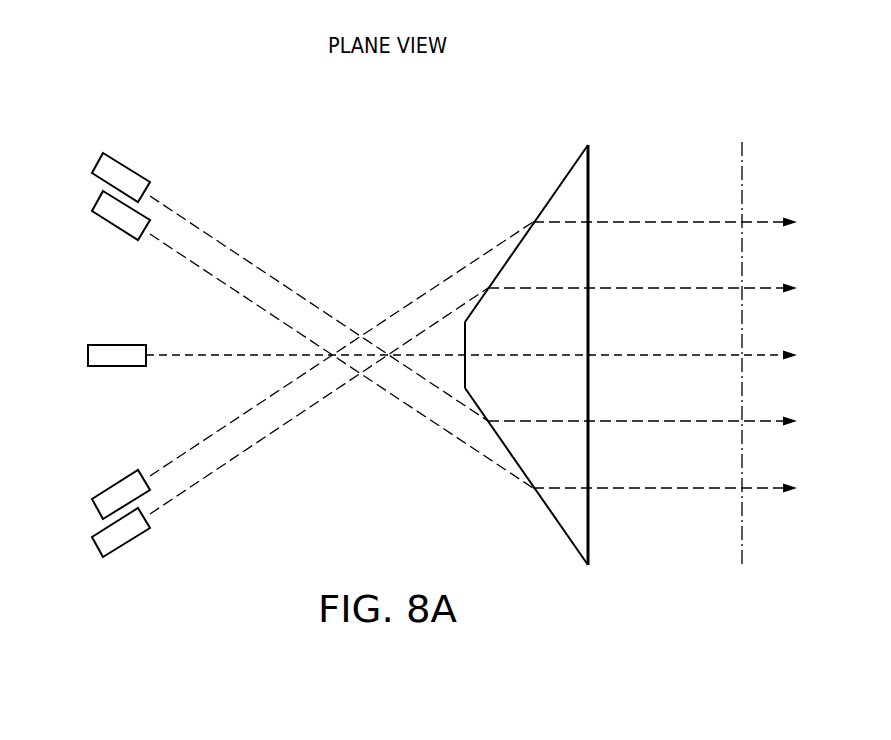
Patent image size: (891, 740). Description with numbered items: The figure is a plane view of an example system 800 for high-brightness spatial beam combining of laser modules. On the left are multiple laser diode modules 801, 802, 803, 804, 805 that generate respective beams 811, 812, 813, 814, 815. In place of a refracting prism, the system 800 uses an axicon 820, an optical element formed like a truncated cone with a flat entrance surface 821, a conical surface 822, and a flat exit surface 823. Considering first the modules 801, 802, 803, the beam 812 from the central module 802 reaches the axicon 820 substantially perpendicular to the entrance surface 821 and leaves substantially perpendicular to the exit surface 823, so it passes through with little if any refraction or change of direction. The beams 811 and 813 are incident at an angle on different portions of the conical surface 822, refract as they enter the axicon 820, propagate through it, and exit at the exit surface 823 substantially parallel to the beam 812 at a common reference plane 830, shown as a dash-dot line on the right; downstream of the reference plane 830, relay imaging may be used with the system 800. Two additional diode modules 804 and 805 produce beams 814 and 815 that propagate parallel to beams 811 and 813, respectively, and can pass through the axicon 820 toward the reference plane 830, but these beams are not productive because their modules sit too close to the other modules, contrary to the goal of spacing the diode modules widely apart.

The system 800 is at (413, 149).
The laser diode module 801 is at (127, 166).
The laser diode module 802 is at (118, 343).
The laser diode module 803 is at (130, 541).
The diode module 804 is at (112, 223).
The diode module 805 is at (118, 484).
The beam 811 is at (257, 270).
The beam 812 is at (203, 358).
The beam 813 is at (262, 438).
The beam 814 is at (232, 287).
The beam 815 is at (168, 462).
The axicon 820 is at (533, 355).
The flat entrance surface 821 is at (465, 366).
The conical surface 822 is at (553, 521).
The flat exit surface 823 is at (592, 520).
The common reference plane 830 is at (745, 156).